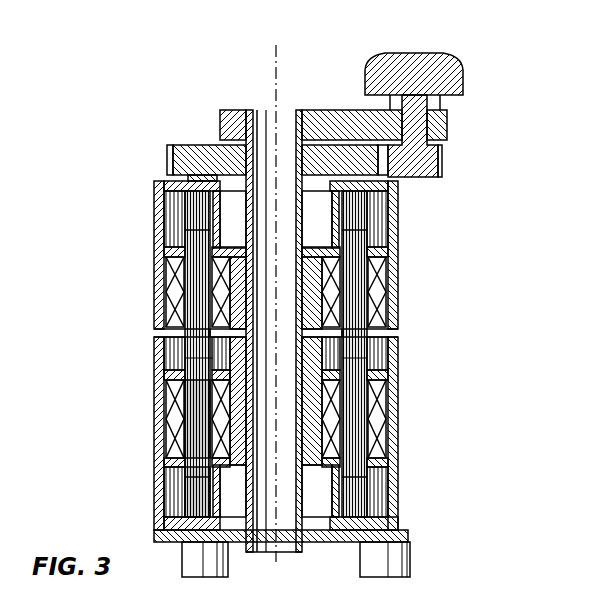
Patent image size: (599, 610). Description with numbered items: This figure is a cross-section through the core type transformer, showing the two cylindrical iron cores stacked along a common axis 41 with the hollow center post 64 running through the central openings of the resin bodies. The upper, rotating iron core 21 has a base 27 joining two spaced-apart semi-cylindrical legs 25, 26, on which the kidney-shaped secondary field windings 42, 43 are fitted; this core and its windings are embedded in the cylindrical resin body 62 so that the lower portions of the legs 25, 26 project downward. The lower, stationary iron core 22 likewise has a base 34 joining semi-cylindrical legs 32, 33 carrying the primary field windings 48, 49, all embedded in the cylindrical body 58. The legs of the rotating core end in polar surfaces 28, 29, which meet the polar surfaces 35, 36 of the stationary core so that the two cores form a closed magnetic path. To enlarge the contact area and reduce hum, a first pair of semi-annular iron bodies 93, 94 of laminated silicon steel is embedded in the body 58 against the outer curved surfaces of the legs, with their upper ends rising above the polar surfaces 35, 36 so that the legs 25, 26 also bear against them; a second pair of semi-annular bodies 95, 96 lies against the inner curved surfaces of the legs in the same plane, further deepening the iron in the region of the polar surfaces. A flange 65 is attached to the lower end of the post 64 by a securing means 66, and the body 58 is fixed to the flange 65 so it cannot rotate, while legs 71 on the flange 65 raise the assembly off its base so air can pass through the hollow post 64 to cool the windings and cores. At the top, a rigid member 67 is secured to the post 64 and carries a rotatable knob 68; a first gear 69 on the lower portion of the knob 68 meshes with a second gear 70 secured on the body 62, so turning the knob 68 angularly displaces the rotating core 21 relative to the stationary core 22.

The common axis 41 is at (272, 82).
The securing means 66 is at (288, 553).
The hollow center post 64 is at (248, 110).
The rigid member 67 is at (352, 110).
The rotatable knob 68 is at (400, 53).
The first gear 69 is at (420, 178).
The second gear 70 is at (205, 147).
The cylindrical resin body 62 is at (156, 242).
The base 27 is at (168, 182).
The rotating iron core 21 is at (178, 201).
The secondary field winding 42 is at (172, 276).
The semi-cylindrical leg 25 is at (197, 312).
The semi-annular body 95 is at (215, 345).
The cylindrical body 58 is at (158, 448).
The polar surface 28 is at (218, 345).
The polar surface 35 is at (205, 352).
The semi-annular iron body 93 is at (213, 358).
The primary field winding 48 is at (172, 401).
The semi-cylindrical leg 32 is at (195, 429).
The stationary iron core 22 is at (167, 485).
The base 34 is at (196, 500).
The semi-cylindrical leg 26 is at (358, 265).
The secondary field winding 43 is at (383, 290).
The semi-annular body 96 is at (325, 345).
The polar surface 29 is at (363, 345).
The semi-annular iron body 94 is at (340, 356).
The polar surface 36 is at (340, 358).
The primary field winding 49 is at (375, 421).
The semi-cylindrical leg 33 is at (354, 454).
The flange 65 is at (330, 543).
The legs 71 is at (215, 560).